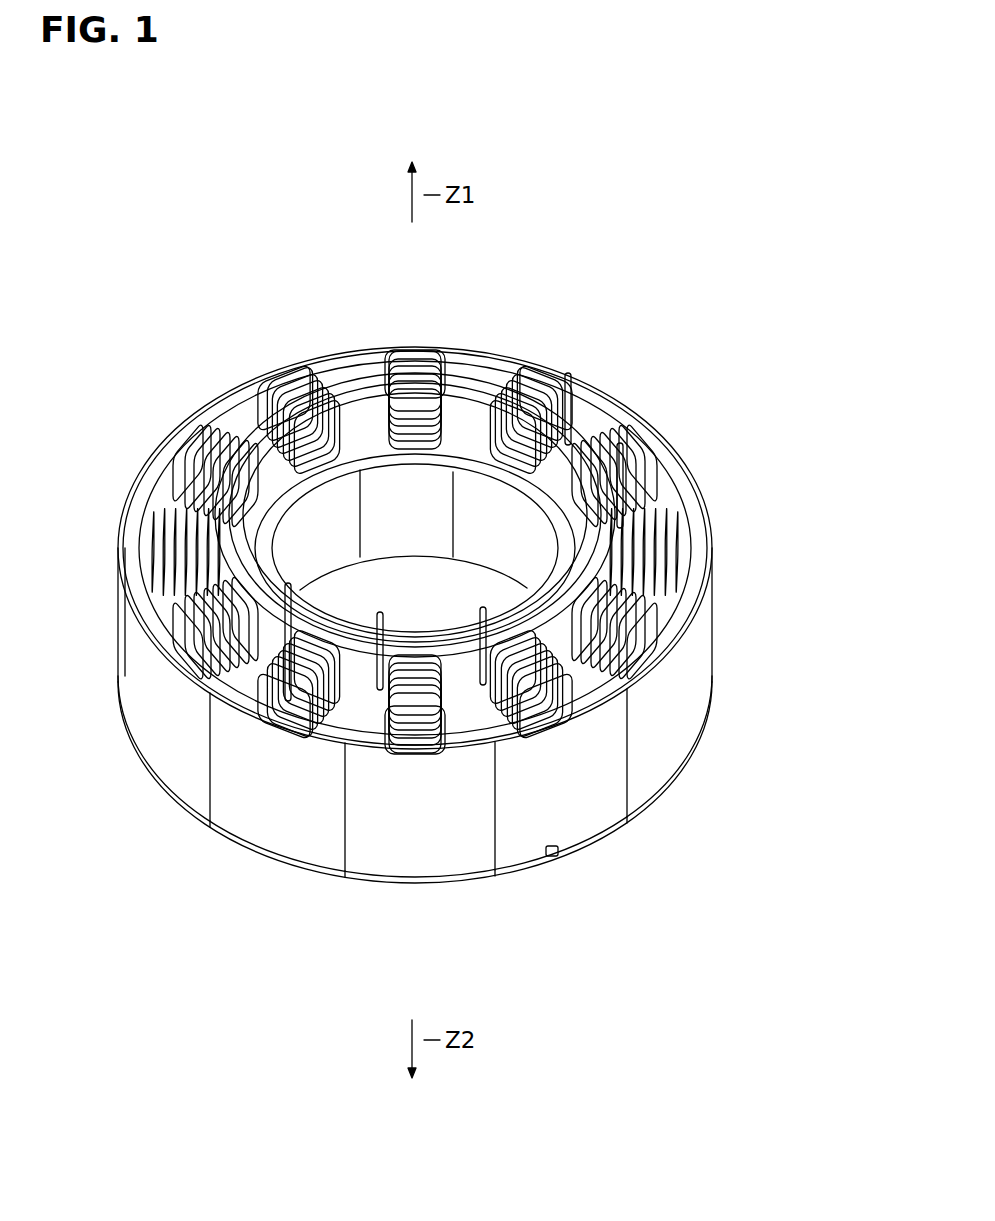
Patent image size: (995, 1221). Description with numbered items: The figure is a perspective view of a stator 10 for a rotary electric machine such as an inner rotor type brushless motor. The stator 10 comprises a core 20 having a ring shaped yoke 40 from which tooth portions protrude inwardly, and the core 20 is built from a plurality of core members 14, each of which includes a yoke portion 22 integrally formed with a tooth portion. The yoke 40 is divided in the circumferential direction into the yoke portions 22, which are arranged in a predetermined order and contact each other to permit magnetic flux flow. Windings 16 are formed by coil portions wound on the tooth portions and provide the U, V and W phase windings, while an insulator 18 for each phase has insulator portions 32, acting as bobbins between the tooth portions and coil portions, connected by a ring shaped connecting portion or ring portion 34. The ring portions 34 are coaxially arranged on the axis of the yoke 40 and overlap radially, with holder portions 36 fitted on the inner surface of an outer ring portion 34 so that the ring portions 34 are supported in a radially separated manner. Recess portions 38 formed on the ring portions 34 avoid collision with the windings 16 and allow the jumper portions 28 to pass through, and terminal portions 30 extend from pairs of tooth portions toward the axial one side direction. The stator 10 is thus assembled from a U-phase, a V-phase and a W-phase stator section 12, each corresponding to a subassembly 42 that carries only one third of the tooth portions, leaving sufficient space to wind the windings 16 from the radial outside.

The stator 10 is at (412, 114).
The phase stator section 12 is at (268, 862).
The core member 14 is at (200, 788).
The winding 16 is at (481, 617).
The insulator 18 is at (487, 443).
The core 20 is at (710, 598).
The yoke portion 22 is at (173, 760).
The jumper portion 28 is at (212, 642).
The terminal portion 30 is at (747, 535).
The insulator portion 32 is at (173, 797).
The ring portion 34 is at (330, 415).
The holder portion 36 is at (353, 385).
The recess portion 38 is at (560, 836).
The yoke 40 is at (117, 638).
The subassembly 42 is at (117, 657).